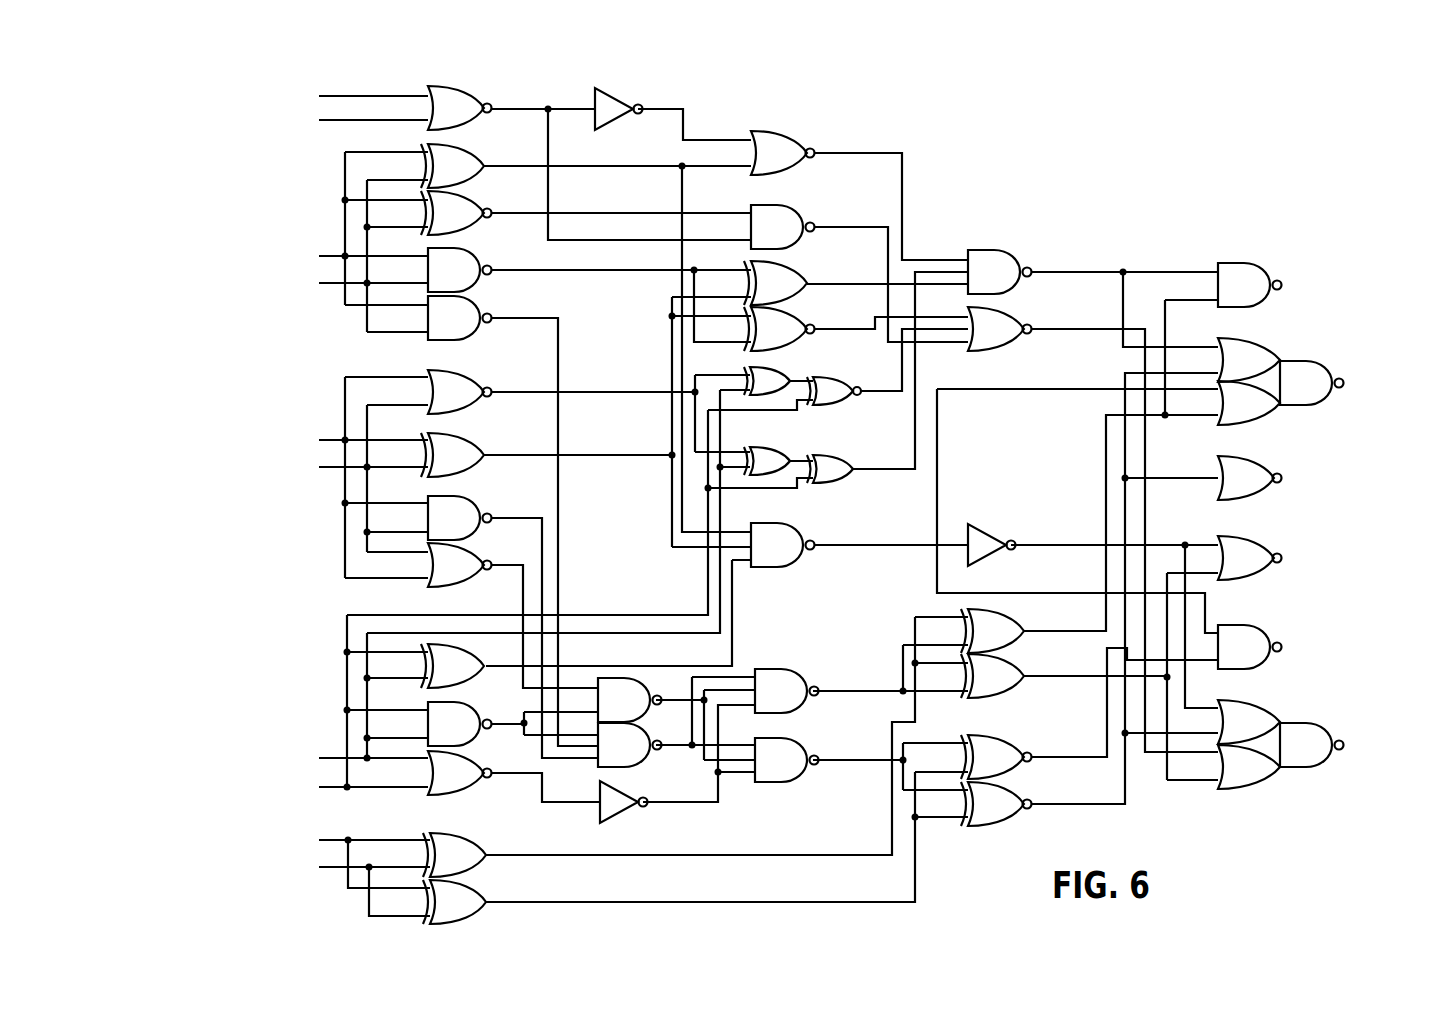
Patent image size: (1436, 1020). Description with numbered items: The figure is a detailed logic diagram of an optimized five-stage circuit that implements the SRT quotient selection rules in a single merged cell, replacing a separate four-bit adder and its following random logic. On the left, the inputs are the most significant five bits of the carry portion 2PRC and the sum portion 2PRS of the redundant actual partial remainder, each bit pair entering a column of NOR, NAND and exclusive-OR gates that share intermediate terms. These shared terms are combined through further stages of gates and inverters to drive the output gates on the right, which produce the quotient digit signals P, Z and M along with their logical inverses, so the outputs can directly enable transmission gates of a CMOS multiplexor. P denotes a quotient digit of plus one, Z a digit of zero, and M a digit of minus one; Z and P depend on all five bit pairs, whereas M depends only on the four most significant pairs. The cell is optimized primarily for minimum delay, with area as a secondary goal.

The sum portion of the redundant partial remainder 2PRS is at (287, 468).
The carry portion of the redundant partial remainder 2PRC is at (287, 493).
The quotient digit signal P is at (1396, 478).
The quotient digit signal Z is at (1396, 745).
The quotient digit signal M is at (1281, 558).